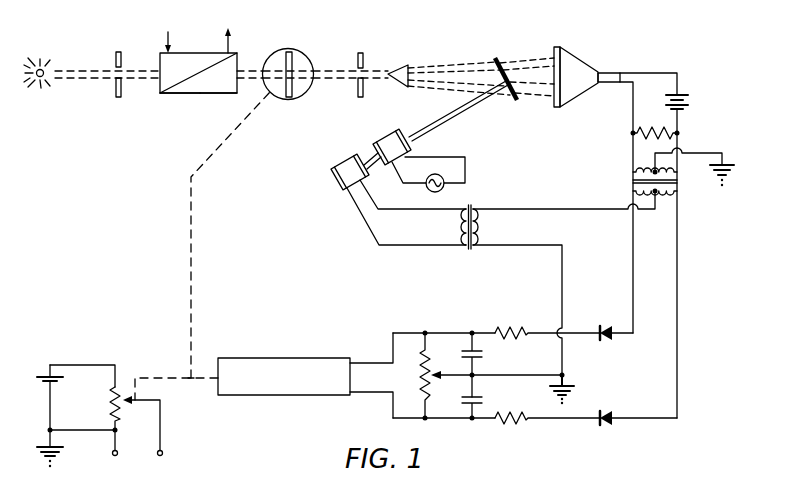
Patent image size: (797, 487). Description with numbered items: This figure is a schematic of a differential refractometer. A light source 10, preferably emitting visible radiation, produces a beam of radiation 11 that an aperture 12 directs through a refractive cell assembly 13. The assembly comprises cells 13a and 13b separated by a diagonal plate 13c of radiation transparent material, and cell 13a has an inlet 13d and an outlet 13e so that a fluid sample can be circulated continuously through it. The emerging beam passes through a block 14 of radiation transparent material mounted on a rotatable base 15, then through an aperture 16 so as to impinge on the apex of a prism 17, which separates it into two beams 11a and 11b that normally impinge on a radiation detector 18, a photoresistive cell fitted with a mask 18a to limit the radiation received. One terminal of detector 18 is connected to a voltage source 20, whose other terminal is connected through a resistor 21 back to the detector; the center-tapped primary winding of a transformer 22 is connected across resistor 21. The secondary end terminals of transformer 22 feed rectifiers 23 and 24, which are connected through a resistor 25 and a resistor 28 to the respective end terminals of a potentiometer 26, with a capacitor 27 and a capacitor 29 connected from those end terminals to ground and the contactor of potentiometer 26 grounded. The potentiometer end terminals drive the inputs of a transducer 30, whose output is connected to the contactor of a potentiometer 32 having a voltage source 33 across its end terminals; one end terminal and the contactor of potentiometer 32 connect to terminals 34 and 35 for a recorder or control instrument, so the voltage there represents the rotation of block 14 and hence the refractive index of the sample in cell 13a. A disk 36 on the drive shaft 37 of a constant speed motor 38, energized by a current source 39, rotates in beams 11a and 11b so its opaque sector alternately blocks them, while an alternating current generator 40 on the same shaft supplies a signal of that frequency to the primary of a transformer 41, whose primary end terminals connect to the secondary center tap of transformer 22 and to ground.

The light source 10 is at (43, 64).
The beam of radiation 11 is at (143, 72).
The radiation beam 11a is at (425, 67).
The radiation beam 11b is at (467, 88).
The aperture 12 is at (104, 58).
The refractive cell assembly 13 is at (200, 52).
The cell 13a is at (163, 84).
The cell 13b is at (200, 89).
The diagonal plate 13c is at (177, 93).
The inlet 13d is at (168, 32).
The outlet 13e is at (230, 38).
The block 14 is at (292, 60).
The rotatable base 15 is at (280, 55).
The aperture 16 is at (367, 61).
The prism 17 is at (406, 84).
The radiation detector 18 is at (591, 67).
The mask 18a is at (552, 48).
The voltage source 20 is at (683, 102).
The resistor 21 is at (635, 130).
The transformer 22 is at (686, 184).
The rectifier 23 is at (608, 338).
The rectifier 24 is at (610, 423).
The resistor 25 is at (502, 328).
The potentiometer 26 is at (428, 362).
The capacitor 27 is at (463, 350).
The resistor 28 is at (522, 421).
The capacitor 29 is at (463, 403).
The transducer 30 is at (282, 395).
The potentiometer 32 is at (111, 389).
The voltage source 33 is at (48, 383).
The terminal 34 is at (118, 453).
The terminal 35 is at (163, 453).
The disk 36 is at (516, 100).
The drive shaft 37 is at (437, 123).
The constant speed motor 38 is at (380, 136).
The current source 39 is at (445, 189).
The alternating current generator 40 is at (337, 160).
The transformer 41 is at (470, 252).